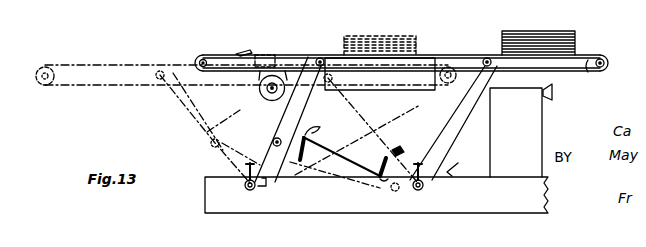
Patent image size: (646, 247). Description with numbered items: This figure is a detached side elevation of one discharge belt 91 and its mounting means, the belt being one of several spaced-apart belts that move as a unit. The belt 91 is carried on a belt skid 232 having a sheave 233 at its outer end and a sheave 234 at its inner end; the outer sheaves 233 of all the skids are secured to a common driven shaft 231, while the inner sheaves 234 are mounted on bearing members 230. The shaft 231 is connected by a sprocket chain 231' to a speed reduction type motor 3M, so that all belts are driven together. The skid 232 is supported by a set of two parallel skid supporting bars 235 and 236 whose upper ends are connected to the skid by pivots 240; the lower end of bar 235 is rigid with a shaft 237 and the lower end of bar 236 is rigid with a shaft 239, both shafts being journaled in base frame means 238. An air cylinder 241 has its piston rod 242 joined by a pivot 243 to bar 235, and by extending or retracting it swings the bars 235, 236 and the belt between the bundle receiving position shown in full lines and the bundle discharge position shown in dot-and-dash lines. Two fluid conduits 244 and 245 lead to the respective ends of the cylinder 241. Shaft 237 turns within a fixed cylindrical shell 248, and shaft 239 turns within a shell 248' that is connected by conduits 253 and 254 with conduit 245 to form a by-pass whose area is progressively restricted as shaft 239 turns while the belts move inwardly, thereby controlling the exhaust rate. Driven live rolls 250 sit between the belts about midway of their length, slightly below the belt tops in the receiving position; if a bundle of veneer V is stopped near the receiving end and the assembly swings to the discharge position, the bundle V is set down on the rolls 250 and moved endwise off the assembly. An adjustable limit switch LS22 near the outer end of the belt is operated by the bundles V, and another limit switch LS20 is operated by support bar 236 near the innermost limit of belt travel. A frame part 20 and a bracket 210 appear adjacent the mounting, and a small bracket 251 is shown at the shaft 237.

The machine housing 20 is at (508, 136).
The discharge belt 91 is at (441, 55).
The bracket 210 is at (553, 94).
The bearing member 230 is at (600, 73).
The shaft 231 is at (121, 82).
The sprocket chain 231' is at (246, 89).
The belt skid 232 is at (588, 60).
The sheave 233 is at (232, 52).
The sheave 234 is at (590, 71).
The skid supporting bar 235 is at (285, 100).
The skid supporting bar 236 is at (443, 135).
The shaft 237 is at (250, 192).
The base frame means 238 is at (218, 206).
The shaft 239 is at (418, 191).
The pivot 240 is at (157, 72).
The air cylinder 241 is at (328, 172).
The piston rod 242 is at (312, 135).
The pivot 243 is at (216, 149).
The fluid conduit 244 is at (333, 140).
The fluid conduit 245 is at (387, 156).
The cylindrical shell 248 is at (215, 188).
The shell 248' is at (468, 205).
The live roll 250 is at (408, 91).
The bracket 251 is at (250, 184).
The conduit 253 is at (388, 190).
The conduit 254 is at (428, 188).
The speed reduction type motor 3M is at (262, 94).
The limit switch LS20 is at (447, 172).
The adjustable limit switch LS22 is at (266, 52).
The bundle of veneer V is at (394, 34).